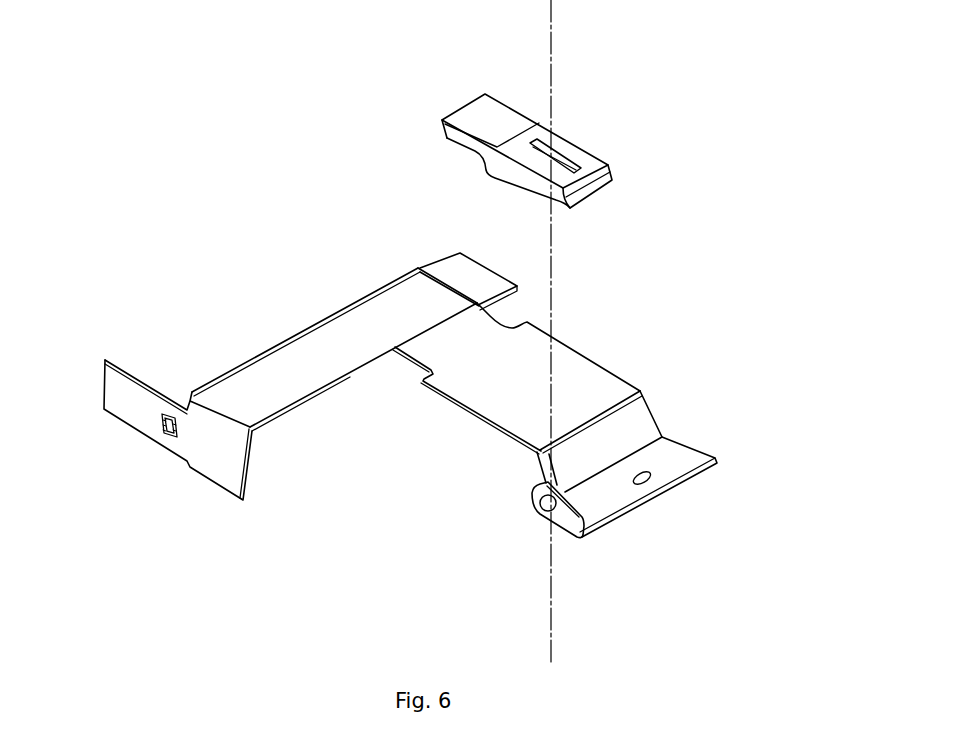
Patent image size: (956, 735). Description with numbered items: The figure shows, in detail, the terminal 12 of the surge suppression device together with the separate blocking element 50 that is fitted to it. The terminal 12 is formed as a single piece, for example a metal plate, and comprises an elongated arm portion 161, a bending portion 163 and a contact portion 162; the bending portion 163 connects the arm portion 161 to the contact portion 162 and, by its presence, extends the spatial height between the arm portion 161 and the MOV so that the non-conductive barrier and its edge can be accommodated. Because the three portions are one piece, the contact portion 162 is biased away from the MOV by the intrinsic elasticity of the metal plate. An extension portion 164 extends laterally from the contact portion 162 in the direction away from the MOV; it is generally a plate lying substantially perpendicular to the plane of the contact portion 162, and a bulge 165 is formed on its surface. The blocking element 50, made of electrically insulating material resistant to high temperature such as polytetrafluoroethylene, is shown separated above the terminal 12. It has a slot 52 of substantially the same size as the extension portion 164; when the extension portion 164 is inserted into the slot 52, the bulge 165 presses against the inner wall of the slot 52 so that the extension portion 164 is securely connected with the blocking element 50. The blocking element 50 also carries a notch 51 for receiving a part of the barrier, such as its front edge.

The terminal 12 is at (129, 409).
The blocking element 50 is at (537, 119).
The notch 51 is at (461, 164).
The slot 52 is at (568, 164).
The arm portion 161 is at (511, 387).
The contact portion 162 is at (675, 465).
The bending portion 163 is at (638, 430).
The extension portion 164 is at (569, 523).
The bulge 165 is at (548, 505).